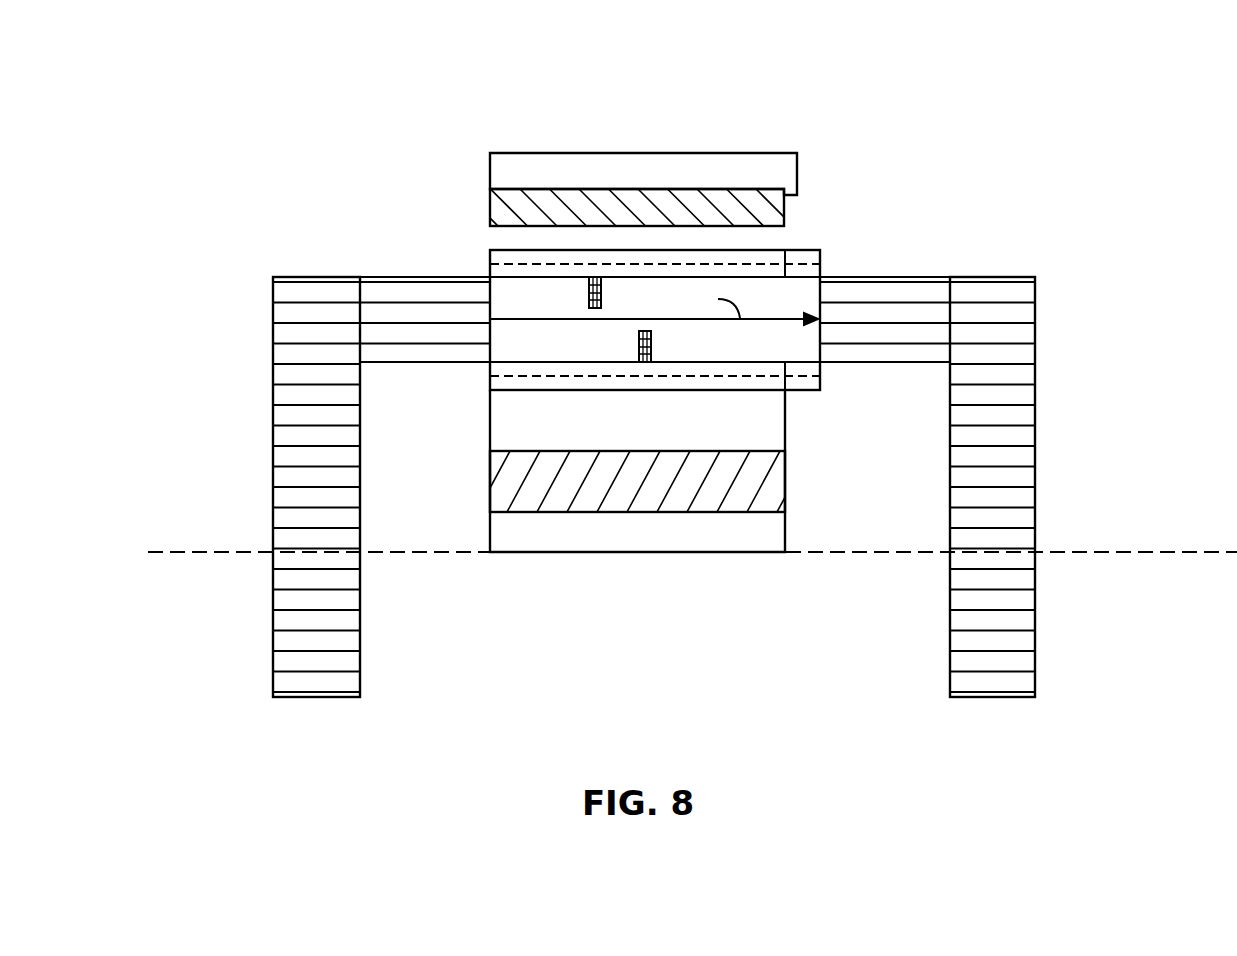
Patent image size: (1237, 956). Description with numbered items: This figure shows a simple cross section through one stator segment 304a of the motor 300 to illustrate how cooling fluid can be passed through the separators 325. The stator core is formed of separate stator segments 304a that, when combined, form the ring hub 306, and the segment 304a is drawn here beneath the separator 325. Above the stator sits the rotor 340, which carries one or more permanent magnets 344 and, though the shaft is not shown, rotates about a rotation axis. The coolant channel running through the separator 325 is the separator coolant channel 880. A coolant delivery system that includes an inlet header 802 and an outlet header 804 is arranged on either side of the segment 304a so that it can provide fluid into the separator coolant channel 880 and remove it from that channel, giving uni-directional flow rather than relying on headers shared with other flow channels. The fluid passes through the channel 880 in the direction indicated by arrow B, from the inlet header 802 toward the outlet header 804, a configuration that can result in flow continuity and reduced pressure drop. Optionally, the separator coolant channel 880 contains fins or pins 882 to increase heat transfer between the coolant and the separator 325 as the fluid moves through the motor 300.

The motor 300 is at (340, 90).
The rotor 340 is at (797, 173).
The permanent magnets 344 is at (784, 215).
The separators 325 is at (488, 265).
The separator coolant channel 880 is at (793, 295).
The fins/pins 882 is at (590, 290).
The ring hub 306 is at (637, 513).
The stator segment 304a is at (530, 540).
The inlet header 802 is at (273, 410).
The outlet header 804 is at (1037, 448).